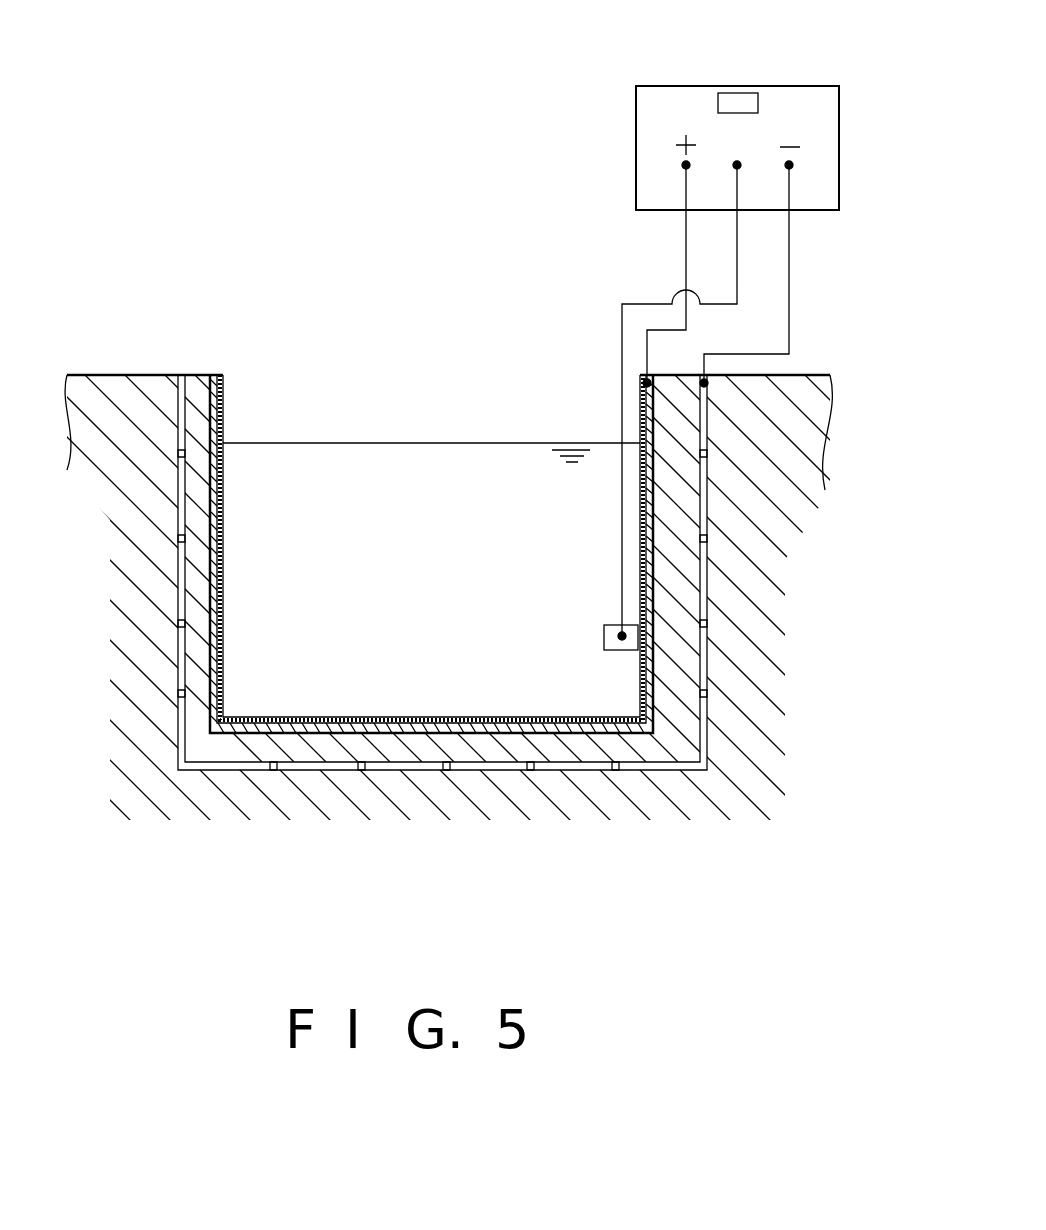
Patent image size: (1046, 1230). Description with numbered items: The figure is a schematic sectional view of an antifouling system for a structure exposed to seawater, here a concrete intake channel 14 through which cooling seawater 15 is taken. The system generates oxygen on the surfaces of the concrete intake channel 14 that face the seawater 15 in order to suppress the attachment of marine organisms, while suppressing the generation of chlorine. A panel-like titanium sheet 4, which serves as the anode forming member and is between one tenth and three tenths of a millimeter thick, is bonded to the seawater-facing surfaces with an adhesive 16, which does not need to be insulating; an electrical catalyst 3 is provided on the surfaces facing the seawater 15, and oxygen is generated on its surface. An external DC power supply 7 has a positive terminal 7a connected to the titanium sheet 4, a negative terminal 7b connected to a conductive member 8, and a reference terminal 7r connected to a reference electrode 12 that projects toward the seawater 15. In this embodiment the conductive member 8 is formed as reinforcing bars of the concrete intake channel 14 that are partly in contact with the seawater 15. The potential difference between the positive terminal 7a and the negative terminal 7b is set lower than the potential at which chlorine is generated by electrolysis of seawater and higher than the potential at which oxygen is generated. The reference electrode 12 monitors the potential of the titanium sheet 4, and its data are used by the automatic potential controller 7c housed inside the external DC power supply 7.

The electrical catalyst 3 is at (222, 410).
The titanium sheet 4 is at (215, 375).
The external DC power supply 7 is at (775, 126).
The positive terminal 7a is at (686, 167).
The negative terminal 7b is at (789, 165).
The automatic potential controller 7c is at (733, 102).
The reference terminal 7r is at (737, 167).
The conductive member 8 is at (707, 575).
The reference electrode 12 is at (608, 625).
The concrete intake channel 14 is at (477, 748).
The seawater 15 is at (338, 443).
The adhesive 16 is at (325, 733).